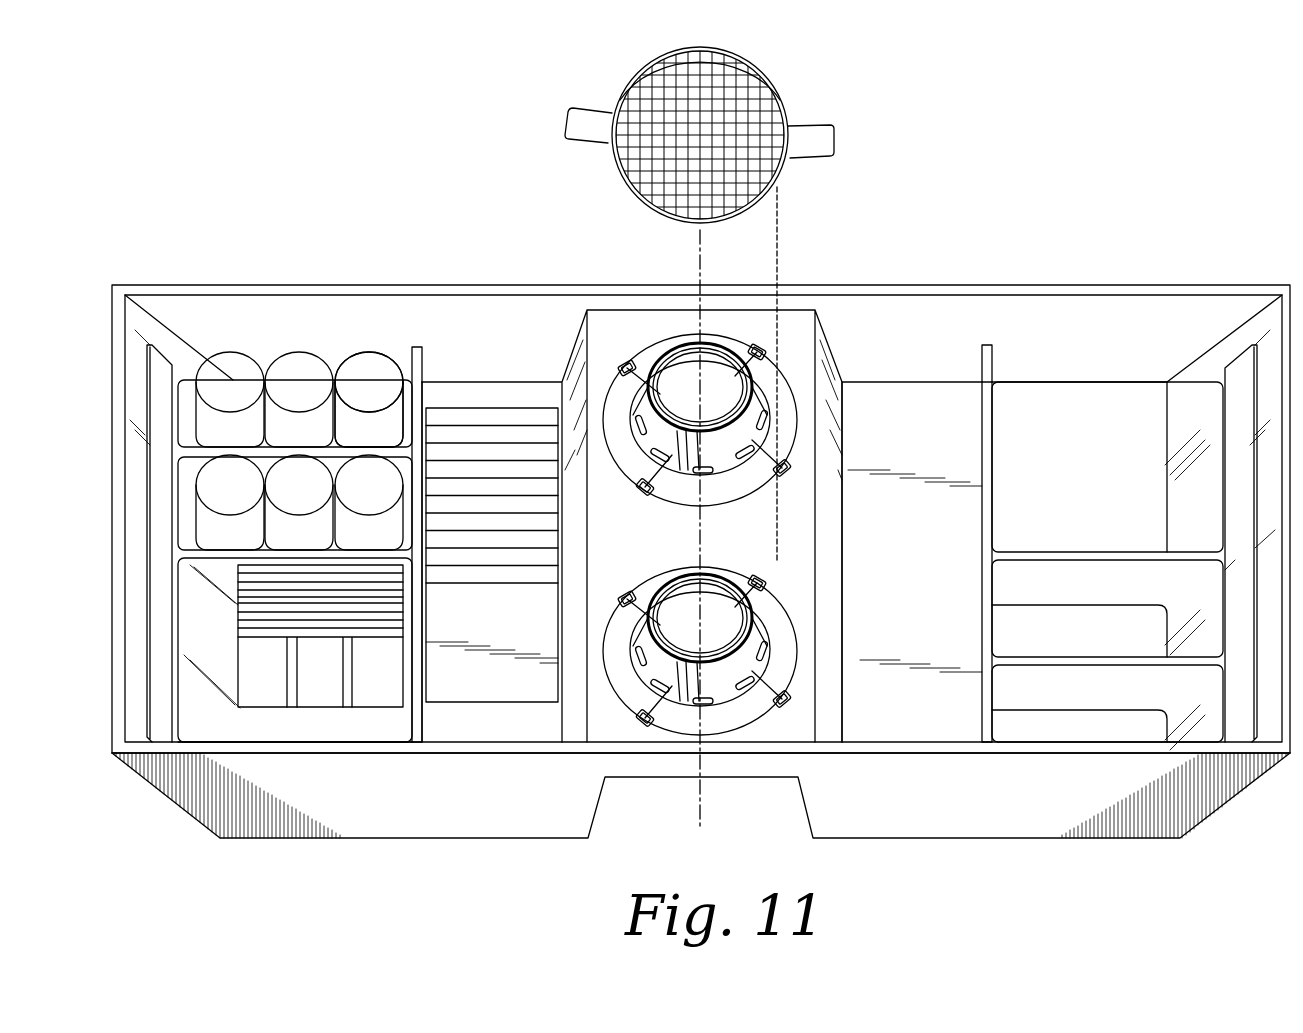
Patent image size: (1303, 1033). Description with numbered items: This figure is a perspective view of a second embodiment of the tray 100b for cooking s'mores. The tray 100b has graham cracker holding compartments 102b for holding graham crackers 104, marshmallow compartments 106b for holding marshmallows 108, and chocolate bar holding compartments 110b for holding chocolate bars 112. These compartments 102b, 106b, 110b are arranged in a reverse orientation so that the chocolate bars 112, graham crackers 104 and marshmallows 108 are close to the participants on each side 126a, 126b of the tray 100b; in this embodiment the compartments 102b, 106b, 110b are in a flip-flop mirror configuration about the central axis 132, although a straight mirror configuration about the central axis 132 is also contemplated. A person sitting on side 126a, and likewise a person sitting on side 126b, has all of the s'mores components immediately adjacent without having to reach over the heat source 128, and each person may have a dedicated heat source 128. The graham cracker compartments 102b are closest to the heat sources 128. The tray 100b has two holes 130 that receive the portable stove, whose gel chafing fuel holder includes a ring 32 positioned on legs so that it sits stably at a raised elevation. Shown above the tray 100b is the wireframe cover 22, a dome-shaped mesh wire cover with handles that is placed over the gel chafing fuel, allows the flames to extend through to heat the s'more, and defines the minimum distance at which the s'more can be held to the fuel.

The wireframe cover 22 is at (628, 72).
The ring 32 is at (620, 473).
The tray 100b is at (1052, 213).
The graham cracker holding compartments 102b is at (457, 400).
The graham crackers 104 is at (505, 410).
The marshmallow compartments 106b is at (312, 533).
The marshmallows 108 is at (364, 368).
The chocolate bar holding compartments 110b is at (348, 727).
The chocolate bars 112 is at (263, 687).
The side 126a is at (925, 126).
The side 126b is at (950, 899).
The heat source 128 is at (673, 548).
The holes 130 is at (728, 490).
The central axis 132 is at (703, 240).